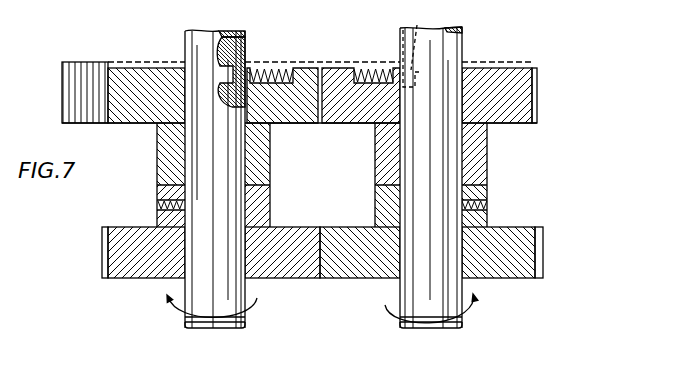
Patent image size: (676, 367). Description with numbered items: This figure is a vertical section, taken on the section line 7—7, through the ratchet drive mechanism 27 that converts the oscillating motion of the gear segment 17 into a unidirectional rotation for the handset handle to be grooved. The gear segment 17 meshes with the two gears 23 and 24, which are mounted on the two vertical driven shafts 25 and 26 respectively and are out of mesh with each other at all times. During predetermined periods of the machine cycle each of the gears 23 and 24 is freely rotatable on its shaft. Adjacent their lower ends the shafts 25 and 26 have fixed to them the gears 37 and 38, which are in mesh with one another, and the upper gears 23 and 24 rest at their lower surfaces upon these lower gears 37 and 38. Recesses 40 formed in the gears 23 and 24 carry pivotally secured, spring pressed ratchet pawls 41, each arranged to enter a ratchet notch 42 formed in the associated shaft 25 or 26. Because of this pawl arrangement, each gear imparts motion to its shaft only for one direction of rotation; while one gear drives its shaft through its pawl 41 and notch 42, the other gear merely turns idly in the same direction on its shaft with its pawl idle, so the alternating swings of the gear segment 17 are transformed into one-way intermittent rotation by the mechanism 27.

The section line 7— 7 is at (230, 2).
The gear segment 17 is at (82, 67).
The gear 23 is at (133, 80).
The gear 24 is at (495, 80).
The driven shaft 25 is at (193, 48).
The driven shaft 26 is at (447, 45).
The ratchet drive mechanism 27 is at (147, 156).
The gear 37 is at (122, 250).
The gear 38 is at (513, 245).
The recess 40 is at (320, 66).
The spring pressed ratchet pawl 41 is at (282, 70).
The ratchet notch 42 is at (250, 72).